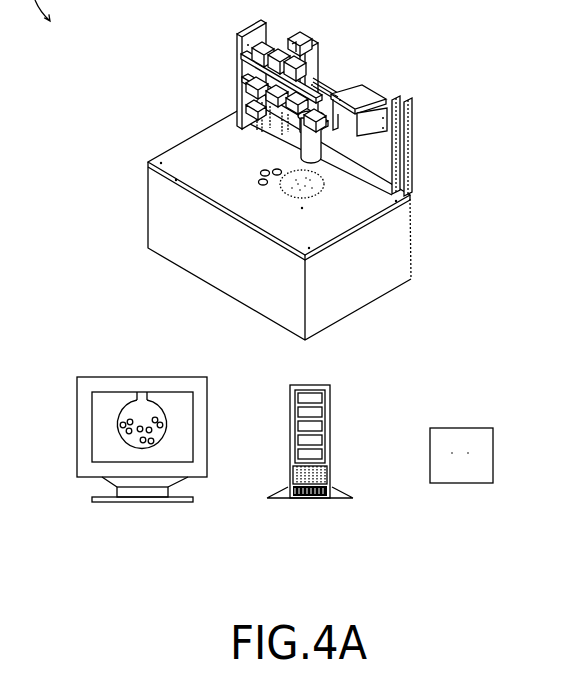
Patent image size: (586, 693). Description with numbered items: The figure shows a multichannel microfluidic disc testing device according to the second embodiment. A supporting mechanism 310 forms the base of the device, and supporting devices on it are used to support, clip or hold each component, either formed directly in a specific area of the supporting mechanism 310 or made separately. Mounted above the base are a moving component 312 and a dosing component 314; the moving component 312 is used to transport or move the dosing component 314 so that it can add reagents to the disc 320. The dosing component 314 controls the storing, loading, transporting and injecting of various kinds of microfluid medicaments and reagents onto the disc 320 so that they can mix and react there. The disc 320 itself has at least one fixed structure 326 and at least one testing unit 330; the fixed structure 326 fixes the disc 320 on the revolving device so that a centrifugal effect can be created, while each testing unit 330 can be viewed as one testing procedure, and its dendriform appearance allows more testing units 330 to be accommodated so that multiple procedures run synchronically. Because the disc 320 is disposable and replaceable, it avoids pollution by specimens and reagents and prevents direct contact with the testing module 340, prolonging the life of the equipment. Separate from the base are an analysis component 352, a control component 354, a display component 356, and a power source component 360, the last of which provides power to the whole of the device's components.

The supporting mechanism 310 is at (299, 241).
The moving component 312 is at (246, 26).
The dosing component 314 is at (306, 58).
The disc 320 is at (283, 187).
The fixed structure 326 is at (287, 181).
The testing unit 330 is at (318, 191).
The testing module 340 is at (320, 117).
The analysis component 352 is at (306, 492).
The control component 354 is at (323, 492).
The display component 356 is at (177, 445).
The power source component 360 is at (460, 485).